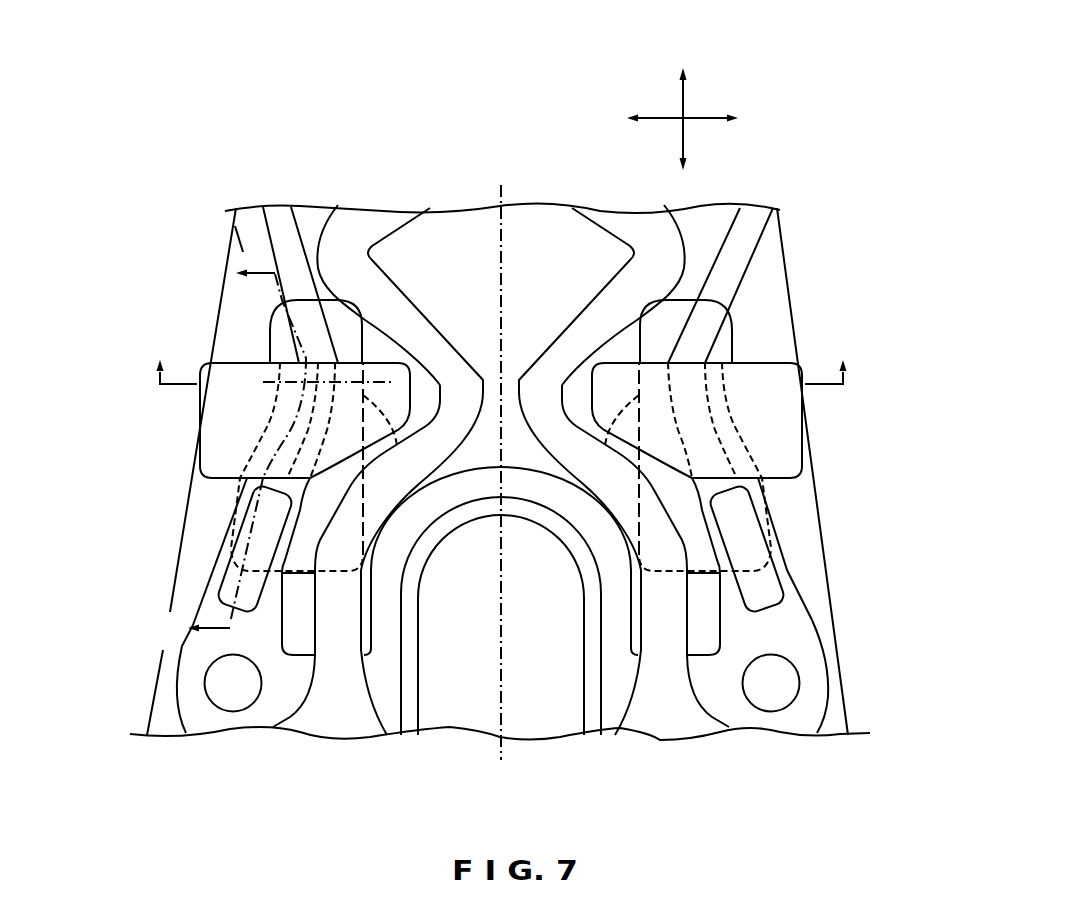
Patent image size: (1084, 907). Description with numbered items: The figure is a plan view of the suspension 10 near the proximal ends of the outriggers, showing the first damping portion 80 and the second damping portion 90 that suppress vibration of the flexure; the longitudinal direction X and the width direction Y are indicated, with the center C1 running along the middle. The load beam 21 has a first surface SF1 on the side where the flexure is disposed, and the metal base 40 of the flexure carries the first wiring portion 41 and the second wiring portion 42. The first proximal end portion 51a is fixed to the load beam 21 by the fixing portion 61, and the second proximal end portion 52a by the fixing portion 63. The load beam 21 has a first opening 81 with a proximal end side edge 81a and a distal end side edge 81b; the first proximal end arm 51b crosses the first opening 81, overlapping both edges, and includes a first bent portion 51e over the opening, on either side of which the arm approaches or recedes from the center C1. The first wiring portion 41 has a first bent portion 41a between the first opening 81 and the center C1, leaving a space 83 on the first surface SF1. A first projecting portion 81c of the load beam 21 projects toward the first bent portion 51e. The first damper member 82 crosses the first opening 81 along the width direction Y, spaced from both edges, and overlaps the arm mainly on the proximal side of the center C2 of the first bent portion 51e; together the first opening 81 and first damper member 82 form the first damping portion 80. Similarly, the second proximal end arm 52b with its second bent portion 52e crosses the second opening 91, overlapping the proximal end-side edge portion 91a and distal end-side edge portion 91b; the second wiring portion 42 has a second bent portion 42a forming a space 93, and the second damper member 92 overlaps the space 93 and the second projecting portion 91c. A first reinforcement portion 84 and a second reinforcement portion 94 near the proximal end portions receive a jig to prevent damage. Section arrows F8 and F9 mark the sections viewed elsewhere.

The suspension 10 is at (469, 186).
The load beam 21 is at (160, 656).
The metal base 40 is at (390, 643).
The first wiring portion 41 is at (365, 227).
The first bent portion 41a is at (435, 382).
The second wiring portion 42 is at (617, 218).
The second bent portion 42a is at (567, 382).
The first proximal end portion 51a is at (177, 692).
The first proximal end arm 51b is at (243, 236).
The first bent portion 51e is at (343, 390).
The second proximal end portion 52a is at (828, 690).
The second proximal end arm 52b is at (750, 255).
The second bent portion 52e is at (659, 390).
The fixing portion 61 is at (231, 703).
The fixing portion 63 is at (773, 703).
The first damping portion 80 is at (215, 497).
The first opening 81 is at (270, 340).
The proximal end side edge 81a is at (298, 573).
The distal end side edge 81b is at (313, 299).
The first projecting portion 81c is at (281, 393).
The first damper member 82 is at (202, 462).
The space 83 is at (423, 402).
The first reinforcement portion 84 is at (210, 577).
The second damping portion 90 is at (787, 497).
The second opening 91 is at (733, 340).
The proximal end-side edge portion 91a is at (704, 573).
The distal end-side edge portion 91b is at (689, 299).
The second projecting portion 91c is at (721, 393).
The second damper member 92 is at (802, 462).
The space 93 is at (579, 402).
The second reinforcement portion 94 is at (790, 578).
The first surface SF1 is at (297, 220).
The center C1 is at (501, 493).
The center of the first bent portion C2 is at (309, 384).
The section line F8 is at (501, 356).
The section line F9 is at (233, 451).
The longitudinal direction X is at (686, 90).
The width direction Y is at (710, 122).